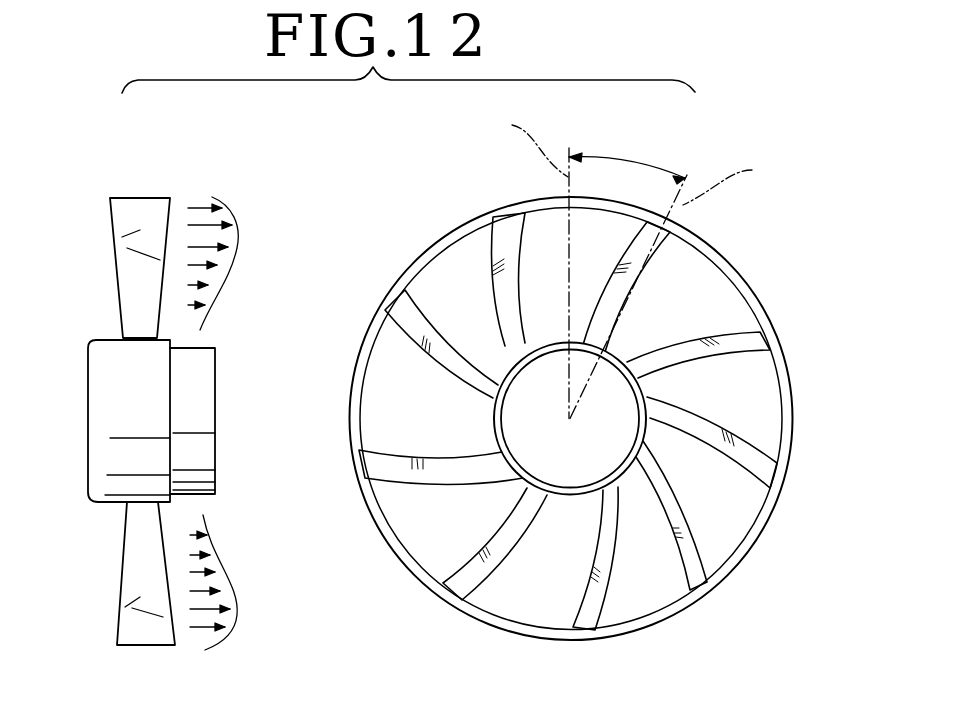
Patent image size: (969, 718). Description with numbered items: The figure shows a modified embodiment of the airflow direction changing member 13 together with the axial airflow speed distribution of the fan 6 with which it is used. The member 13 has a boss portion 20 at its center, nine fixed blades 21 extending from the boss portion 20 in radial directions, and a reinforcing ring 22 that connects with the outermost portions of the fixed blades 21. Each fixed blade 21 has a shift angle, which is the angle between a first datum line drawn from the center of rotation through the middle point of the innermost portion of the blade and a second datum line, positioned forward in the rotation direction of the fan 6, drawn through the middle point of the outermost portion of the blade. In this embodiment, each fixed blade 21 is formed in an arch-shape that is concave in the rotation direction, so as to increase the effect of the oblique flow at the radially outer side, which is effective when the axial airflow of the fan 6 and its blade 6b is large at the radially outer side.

The fan 6 is at (88, 332).
The fan blade 6b is at (129, 214).
The member 13 is at (386, 268).
The boss portion 20 is at (530, 492).
The fixed blade 21 is at (505, 243).
The reinforcing ring 22 is at (743, 282).